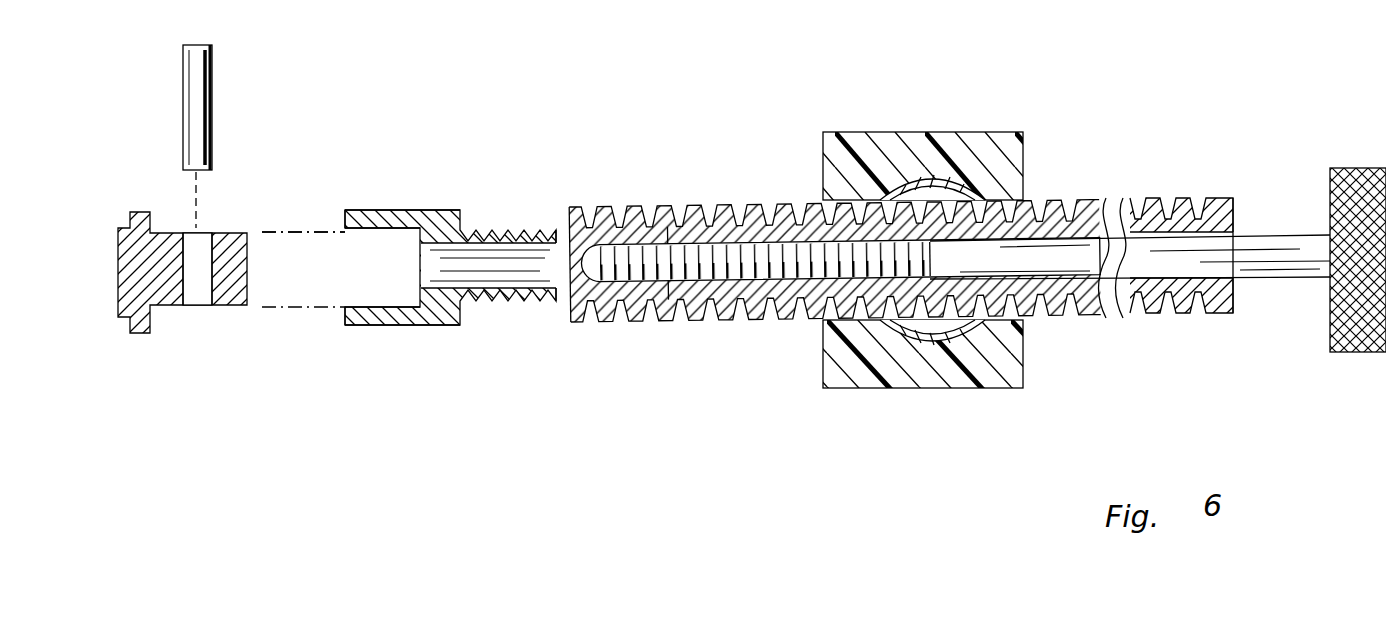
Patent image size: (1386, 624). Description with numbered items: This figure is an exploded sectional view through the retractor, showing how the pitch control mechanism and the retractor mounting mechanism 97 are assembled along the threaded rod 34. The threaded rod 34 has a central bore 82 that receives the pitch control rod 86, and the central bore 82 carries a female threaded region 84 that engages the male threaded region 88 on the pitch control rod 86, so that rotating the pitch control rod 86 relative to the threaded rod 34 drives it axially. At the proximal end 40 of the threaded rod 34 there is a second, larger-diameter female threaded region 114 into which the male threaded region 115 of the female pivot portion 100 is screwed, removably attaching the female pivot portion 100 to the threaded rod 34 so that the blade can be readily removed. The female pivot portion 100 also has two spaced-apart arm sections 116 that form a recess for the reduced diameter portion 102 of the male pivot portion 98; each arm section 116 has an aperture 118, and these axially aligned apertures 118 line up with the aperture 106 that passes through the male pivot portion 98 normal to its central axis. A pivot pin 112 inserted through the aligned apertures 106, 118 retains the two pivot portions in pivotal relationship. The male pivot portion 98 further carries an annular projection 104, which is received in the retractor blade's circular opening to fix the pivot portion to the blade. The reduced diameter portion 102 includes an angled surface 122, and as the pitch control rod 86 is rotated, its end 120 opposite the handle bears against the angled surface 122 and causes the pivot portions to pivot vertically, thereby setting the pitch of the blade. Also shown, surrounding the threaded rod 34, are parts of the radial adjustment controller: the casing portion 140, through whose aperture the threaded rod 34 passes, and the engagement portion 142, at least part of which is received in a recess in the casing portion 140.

The threaded rod 34 is at (1137, 214).
The proximal end 40 is at (877, 264).
The central bore 82 is at (1073, 308).
The female threaded region 84 is at (712, 322).
The pitch control rod 86 is at (1182, 307).
The male threaded region 88 is at (737, 246).
The retractor mounting mechanism 97 is at (330, 345).
The male pivot portion 98 is at (217, 306).
The female pivot portion 100 is at (443, 258).
The reduced diameter portion 102 is at (235, 308).
The annular projection 104 is at (118, 246).
The aperture 106 is at (197, 245).
The pivot pin 112 is at (195, 80).
The female threaded region 114 is at (603, 208).
The male threaded region 115 is at (548, 229).
The spaced-apart arm sections 116 is at (372, 226).
The aperture 118 is at (372, 213).
The end 120 is at (594, 266).
The angled surface 122 is at (262, 232).
The casing portion 140 is at (857, 142).
The engagement portion 142 is at (937, 188).